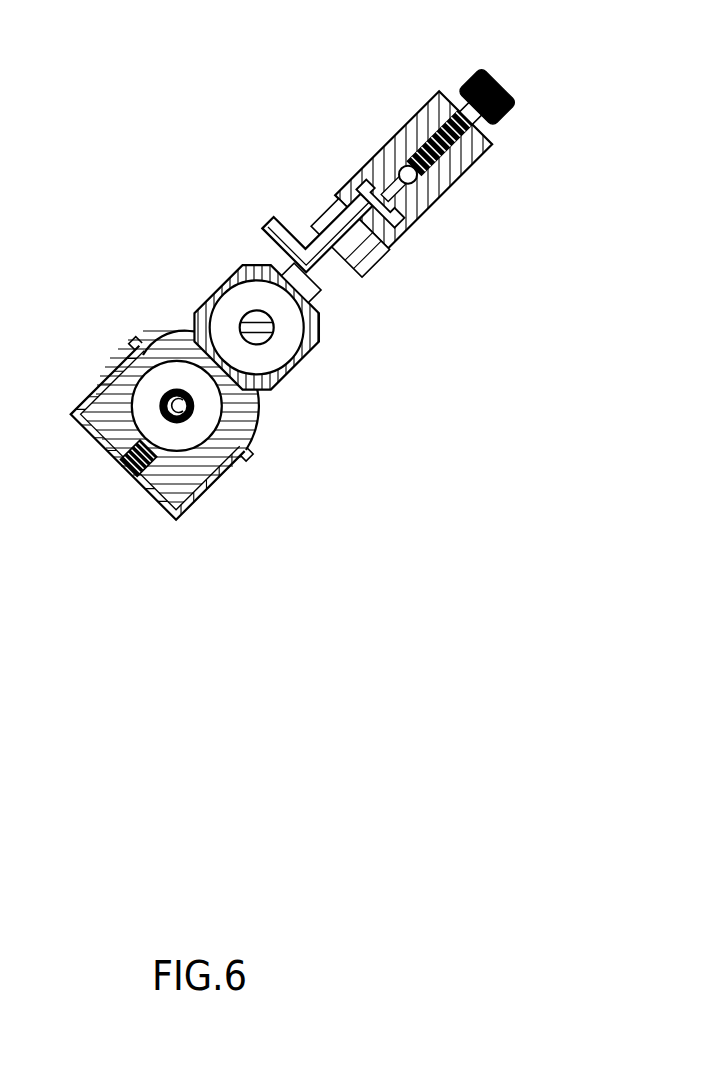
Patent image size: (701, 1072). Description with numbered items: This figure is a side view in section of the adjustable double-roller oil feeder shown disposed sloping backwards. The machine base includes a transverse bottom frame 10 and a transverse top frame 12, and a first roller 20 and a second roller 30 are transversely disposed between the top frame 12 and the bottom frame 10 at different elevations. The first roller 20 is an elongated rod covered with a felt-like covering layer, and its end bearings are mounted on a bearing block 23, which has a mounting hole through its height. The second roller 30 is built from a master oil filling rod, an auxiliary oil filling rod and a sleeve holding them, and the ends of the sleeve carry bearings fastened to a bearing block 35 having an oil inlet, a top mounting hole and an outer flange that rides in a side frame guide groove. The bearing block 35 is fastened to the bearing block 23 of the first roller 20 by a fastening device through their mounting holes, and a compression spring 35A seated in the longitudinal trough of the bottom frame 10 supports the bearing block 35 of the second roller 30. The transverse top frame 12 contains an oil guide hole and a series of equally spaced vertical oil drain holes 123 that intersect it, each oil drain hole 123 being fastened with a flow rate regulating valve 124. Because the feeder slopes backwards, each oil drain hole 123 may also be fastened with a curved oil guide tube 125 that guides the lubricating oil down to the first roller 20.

The transverse bottom frame 10 is at (84, 433).
The transverse top frame 12 is at (410, 118).
The first roller 20 is at (286, 358).
The bearing block 23 is at (228, 269).
The second roller 30 is at (212, 430).
The bearing block 35 is at (167, 330).
The compression spring 35A is at (134, 474).
The oil drain hole 123 is at (369, 188).
The flow rate regulating valve 124 is at (505, 92).
The curved oil guide tube 125 is at (283, 222).